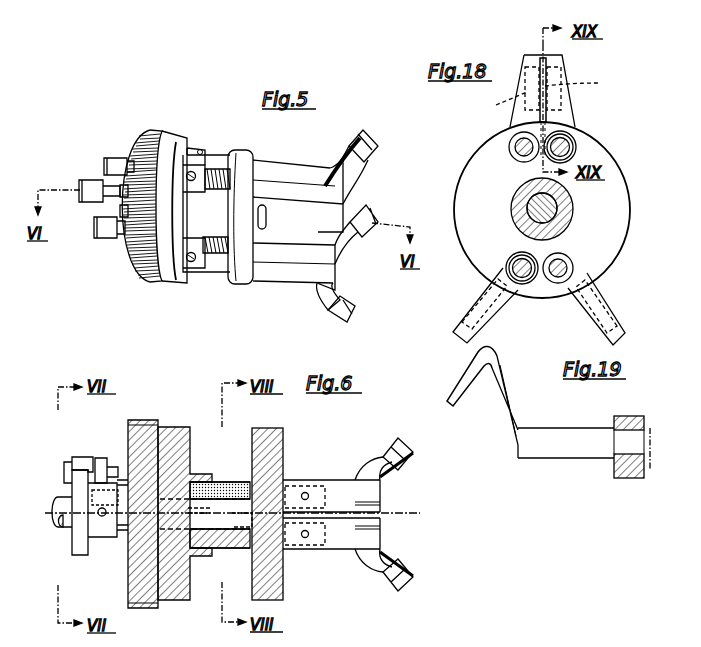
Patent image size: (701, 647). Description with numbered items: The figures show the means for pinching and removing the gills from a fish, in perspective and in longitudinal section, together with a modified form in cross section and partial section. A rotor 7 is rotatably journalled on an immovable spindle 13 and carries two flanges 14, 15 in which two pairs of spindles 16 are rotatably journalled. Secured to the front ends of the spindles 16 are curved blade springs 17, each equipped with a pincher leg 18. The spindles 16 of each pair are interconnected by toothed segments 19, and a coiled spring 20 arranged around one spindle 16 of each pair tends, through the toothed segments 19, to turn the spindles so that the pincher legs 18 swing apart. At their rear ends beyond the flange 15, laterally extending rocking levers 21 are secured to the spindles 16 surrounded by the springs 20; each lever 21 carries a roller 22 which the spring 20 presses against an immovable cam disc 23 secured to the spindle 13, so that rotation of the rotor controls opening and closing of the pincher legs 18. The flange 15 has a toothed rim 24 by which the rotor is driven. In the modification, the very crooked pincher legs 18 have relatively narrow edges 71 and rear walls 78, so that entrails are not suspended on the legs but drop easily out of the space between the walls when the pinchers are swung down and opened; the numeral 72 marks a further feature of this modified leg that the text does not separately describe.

In FIG. 5, the rotor 7 is at (213, 223).
In FIG. 5, the spindle 13 is at (106, 198).
In FIG. 18, the spindle 13 is at (573, 222).
In FIG. 6, the spindle 13 is at (65, 527).
In FIG. 5, the flange 14 is at (243, 273).
In FIG. 18, the flange 14 is at (605, 245).
In FIG. 19, the flange 14 is at (631, 418).
In FIG. 6, the flange 14 is at (283, 452).
In FIG. 5, the flange 15 is at (171, 274).
In FIG. 6, the flange 15 is at (172, 428).
In FIG. 5, the spindle 16 is at (288, 190).
In FIG. 19, the spindle 16 is at (572, 446).
In FIG. 6, the spindle 16 is at (335, 549).
In FIG. 5, the curved blade spring 17 is at (327, 300).
In FIG. 6, the curved blade spring 17 is at (372, 470).
In FIG. 5, the pincher leg 18 is at (355, 314).
In FIG. 18, the pincher leg 18 is at (573, 105).
In FIG. 6, the pincher leg 18 is at (405, 460).
In FIG. 6, the toothed segment 19 is at (210, 548).
In FIG. 5, the coiled spring 20 is at (214, 170).
In FIG. 18, the coiled spring 20 is at (516, 258).
In FIG. 6, the rocking lever 21 is at (100, 458).
In FIG. 6, the roller 22 is at (80, 457).
In FIG. 6, the cam disc 23 is at (80, 547).
In FIG. 5, the toothed rim 24 is at (143, 280).
In FIG. 6, the toothed rim 24 is at (137, 420).
In FIG. 18, the edge 71 is at (543, 56).
In FIG. 19, the edge 71 is at (507, 392).
In FIG. 18, the slot 72 is at (582, 85).
In FIG. 18, the rear wall 78 is at (500, 105).
In FIG. 19, the rear wall 78 is at (507, 410).